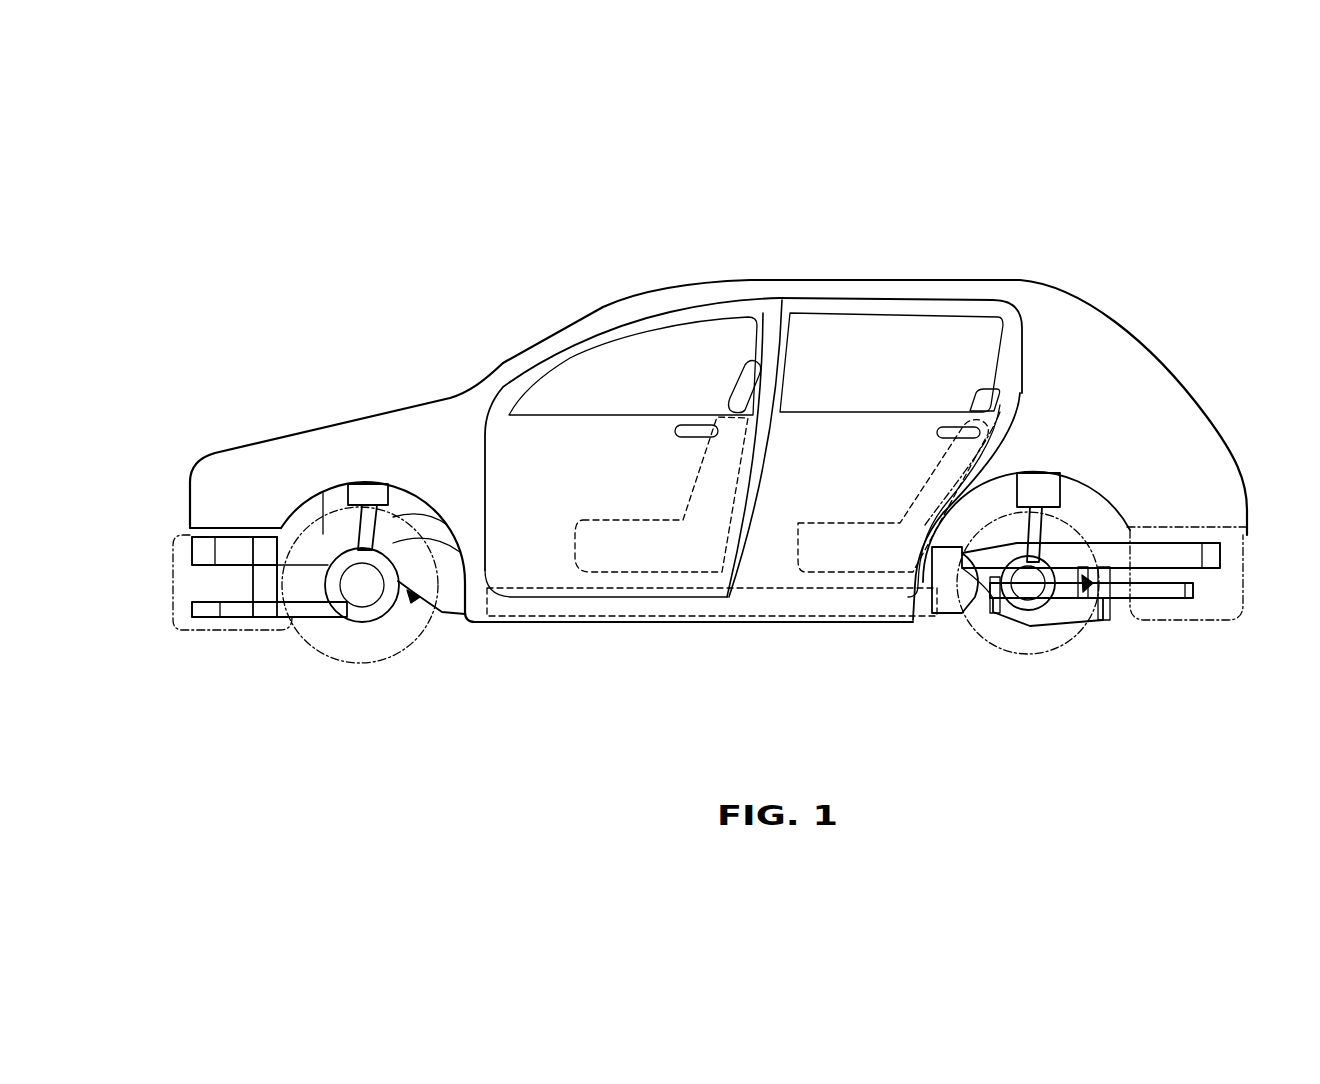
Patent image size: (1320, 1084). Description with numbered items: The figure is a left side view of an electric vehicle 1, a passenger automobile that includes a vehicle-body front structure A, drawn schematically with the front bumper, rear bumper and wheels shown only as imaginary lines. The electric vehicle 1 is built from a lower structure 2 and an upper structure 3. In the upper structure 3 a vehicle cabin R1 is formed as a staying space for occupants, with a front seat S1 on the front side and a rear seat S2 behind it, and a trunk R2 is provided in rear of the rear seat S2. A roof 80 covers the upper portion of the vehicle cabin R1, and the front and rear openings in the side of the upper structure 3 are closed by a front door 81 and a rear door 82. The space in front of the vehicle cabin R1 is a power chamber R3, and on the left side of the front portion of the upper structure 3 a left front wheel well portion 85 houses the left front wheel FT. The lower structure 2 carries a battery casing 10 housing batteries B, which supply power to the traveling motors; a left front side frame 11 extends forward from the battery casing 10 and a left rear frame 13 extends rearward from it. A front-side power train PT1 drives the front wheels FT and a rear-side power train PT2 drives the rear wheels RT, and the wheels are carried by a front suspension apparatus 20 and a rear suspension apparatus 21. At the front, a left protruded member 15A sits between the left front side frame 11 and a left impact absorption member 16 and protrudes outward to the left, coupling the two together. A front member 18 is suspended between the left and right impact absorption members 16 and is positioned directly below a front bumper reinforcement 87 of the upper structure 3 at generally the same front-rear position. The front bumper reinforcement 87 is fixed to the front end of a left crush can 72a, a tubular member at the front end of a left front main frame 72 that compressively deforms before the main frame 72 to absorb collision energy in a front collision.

The electric vehicle 1 is at (694, 228).
The lower structure 2 is at (655, 627).
The upper structure 3 is at (557, 324).
The battery casing 10 is at (567, 625).
The left front side frame 11 is at (334, 624).
The left rear frame 13 is at (1185, 605).
The left protruded member 15A is at (262, 620).
The left impact absorption member 16 is at (228, 620).
The front member 18 is at (200, 620).
The front suspension apparatus 20 is at (340, 512).
The rear suspension apparatus 21 is at (1052, 535).
The left front main frame 72 is at (290, 548).
The left crush can 72a is at (232, 540).
The roof 80 is at (866, 282).
The front door 81 is at (660, 316).
The rear door 82 is at (930, 300).
The left front wheel well portion 85 is at (410, 510).
The front bumper reinforcement 87 is at (192, 550).
The front seat S1 is at (722, 360).
The rear seat S2 is at (979, 392).
The vehicle cabin R1 is at (885, 375).
The trunk R2 is at (1132, 453).
The power chamber R3 is at (313, 517).
The vehicle-body front structure A is at (297, 700).
The batteries B is at (738, 600).
The front wheels FT is at (375, 665).
The front-side power train PT1 is at (430, 632).
The rear-side power train PT2 is at (1107, 612).
The rear wheels RT is at (1042, 656).